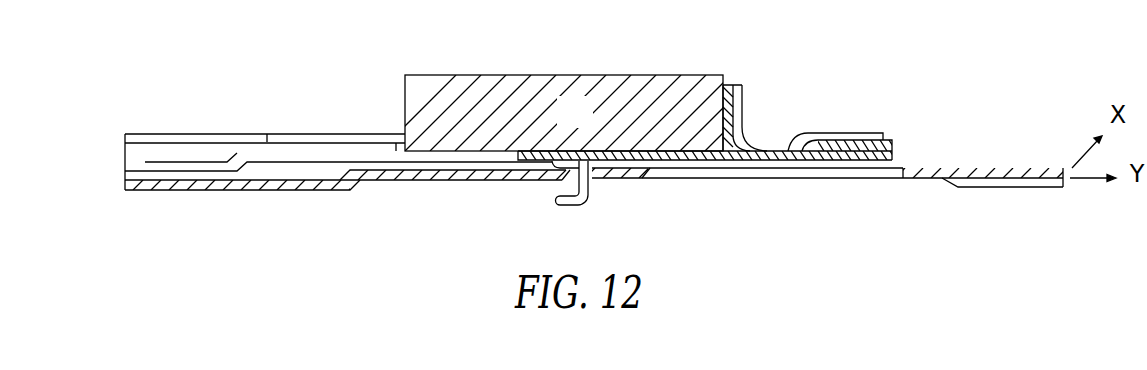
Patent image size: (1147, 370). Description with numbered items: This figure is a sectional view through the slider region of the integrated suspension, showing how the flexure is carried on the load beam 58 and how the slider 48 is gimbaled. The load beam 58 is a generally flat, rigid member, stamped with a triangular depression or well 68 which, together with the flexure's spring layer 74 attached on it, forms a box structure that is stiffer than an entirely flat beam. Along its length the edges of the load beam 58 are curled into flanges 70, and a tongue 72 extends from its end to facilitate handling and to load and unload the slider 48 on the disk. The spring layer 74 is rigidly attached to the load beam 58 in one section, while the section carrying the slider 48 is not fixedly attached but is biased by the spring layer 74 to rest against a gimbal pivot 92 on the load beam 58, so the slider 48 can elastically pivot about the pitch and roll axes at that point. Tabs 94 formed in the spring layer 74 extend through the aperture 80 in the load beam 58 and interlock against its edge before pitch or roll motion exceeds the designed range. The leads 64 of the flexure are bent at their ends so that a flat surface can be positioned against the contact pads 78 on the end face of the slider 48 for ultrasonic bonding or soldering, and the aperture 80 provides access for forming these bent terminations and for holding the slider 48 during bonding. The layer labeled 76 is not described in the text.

The slider 48 is at (589, 125).
The load beam 58 is at (283, 188).
The leads 64 is at (190, 140).
The well 68 is at (192, 175).
The flanges 70 is at (780, 177).
The tongue 72 is at (1005, 190).
The spring layer 74 is at (137, 168).
The insulating layer 76 is at (133, 153).
The contact pads 78 is at (725, 85).
The aperture 80 is at (897, 168).
The gimbal pivot 92 is at (565, 170).
The tabs 94 is at (595, 190).